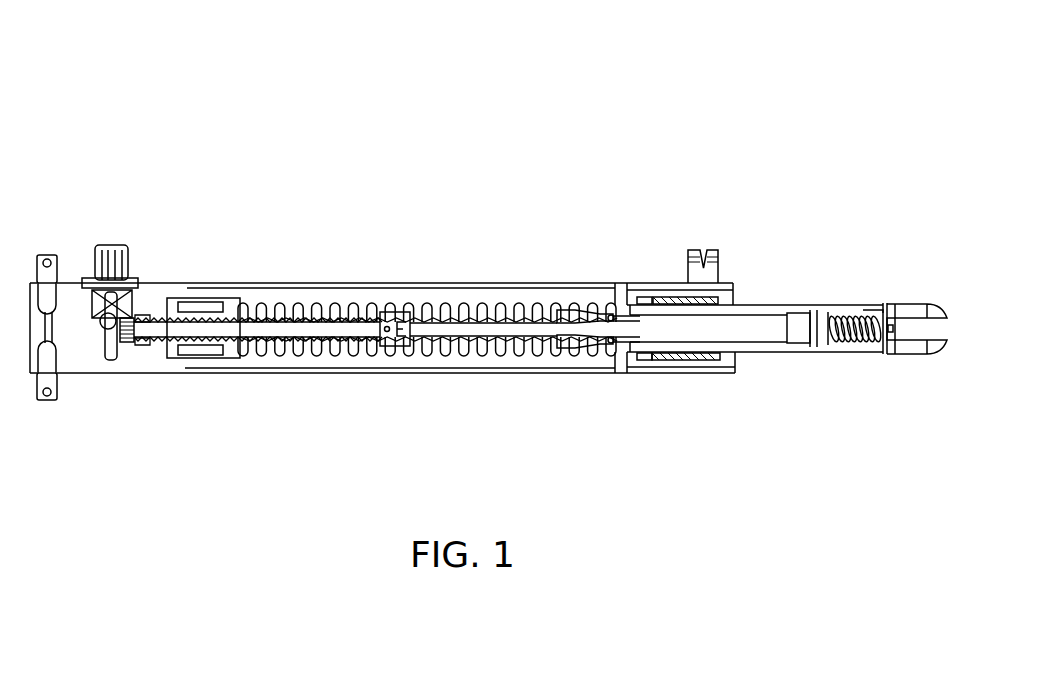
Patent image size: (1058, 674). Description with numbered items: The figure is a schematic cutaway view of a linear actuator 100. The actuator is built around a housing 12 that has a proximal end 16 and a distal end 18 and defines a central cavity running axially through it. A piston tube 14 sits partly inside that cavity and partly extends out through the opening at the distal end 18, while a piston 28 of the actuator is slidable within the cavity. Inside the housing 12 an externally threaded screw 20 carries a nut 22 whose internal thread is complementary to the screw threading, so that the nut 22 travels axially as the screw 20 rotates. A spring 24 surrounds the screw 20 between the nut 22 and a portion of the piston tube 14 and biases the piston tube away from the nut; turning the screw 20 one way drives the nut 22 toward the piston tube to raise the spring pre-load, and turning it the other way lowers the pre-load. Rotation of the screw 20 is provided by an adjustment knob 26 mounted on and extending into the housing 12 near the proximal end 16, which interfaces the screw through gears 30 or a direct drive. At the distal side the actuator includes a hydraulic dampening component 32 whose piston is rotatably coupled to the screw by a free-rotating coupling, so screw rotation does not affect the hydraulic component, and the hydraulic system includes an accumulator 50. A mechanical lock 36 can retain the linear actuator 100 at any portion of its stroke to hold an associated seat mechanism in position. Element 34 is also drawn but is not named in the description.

The linear actuator 100 is at (213, 78).
The housing 12 is at (475, 272).
The piston tube 14 is at (785, 277).
The proximal end 16 is at (93, 142).
The distal end 18 is at (708, 160).
The screw 20 is at (307, 340).
The nut 22 is at (203, 348).
The spring 24 is at (442, 350).
The adjustment knob 26 is at (132, 245).
The piston 28 is at (548, 337).
The gears 30 is at (133, 353).
The hydraulic dampening component 32 is at (753, 342).
The connector block 34 is at (393, 355).
The mechanical lock 36 is at (687, 248).
The accumulator 50 is at (850, 340).